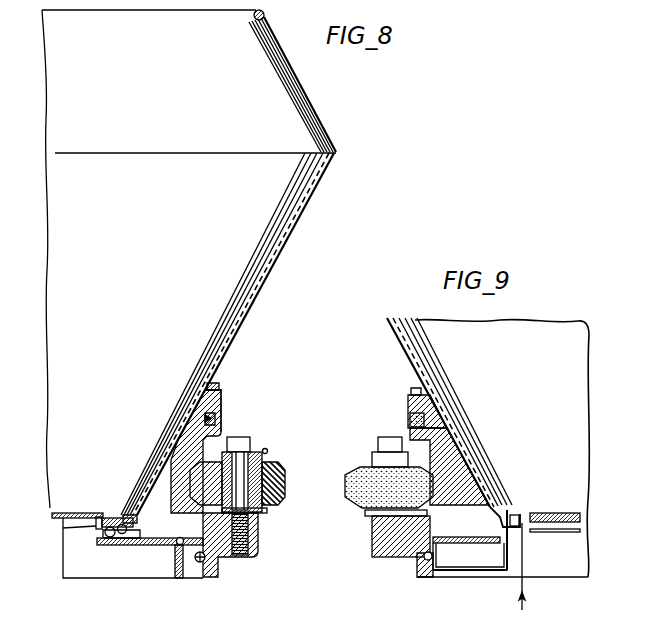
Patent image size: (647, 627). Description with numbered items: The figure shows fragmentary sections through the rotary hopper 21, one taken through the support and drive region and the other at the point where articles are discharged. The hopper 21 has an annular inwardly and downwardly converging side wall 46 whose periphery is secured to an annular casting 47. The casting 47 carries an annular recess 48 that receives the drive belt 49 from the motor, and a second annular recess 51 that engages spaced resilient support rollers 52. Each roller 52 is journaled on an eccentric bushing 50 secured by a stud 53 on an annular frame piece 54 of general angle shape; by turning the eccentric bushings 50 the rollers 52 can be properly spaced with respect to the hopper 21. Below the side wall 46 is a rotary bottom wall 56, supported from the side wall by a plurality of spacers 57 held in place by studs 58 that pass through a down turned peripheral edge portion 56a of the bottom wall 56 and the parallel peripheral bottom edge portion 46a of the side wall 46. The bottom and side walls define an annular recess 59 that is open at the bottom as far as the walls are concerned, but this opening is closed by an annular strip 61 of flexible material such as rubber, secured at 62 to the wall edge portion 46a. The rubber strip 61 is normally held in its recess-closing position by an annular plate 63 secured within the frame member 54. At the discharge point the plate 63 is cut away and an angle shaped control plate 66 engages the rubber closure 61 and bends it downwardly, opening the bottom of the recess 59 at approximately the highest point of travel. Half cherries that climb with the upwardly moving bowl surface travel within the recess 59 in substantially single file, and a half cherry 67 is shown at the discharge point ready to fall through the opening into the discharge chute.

In FIG. 8, the rotary hopper 21 is at (143, 200).
In FIG. 9, the rotary hopper 21 is at (495, 368).
In FIG. 8, the side wall 46 is at (246, 312).
In FIG. 9, the side wall 46 is at (393, 332).
In FIG. 8, the peripheral bottom edge portion 46a is at (136, 518).
In FIG. 9, the peripheral bottom edge portion 46a is at (503, 518).
In FIG. 8, the annular casting 47 is at (222, 405).
In FIG. 9, the annular casting 47 is at (408, 402).
In FIG. 8, the annular recess 48 is at (205, 419).
In FIG. 8, the drive belt 49 is at (216, 422).
In FIG. 9, the drive belt 49 is at (408, 419).
In FIG. 8, the eccentric bushing 50 is at (267, 457).
In FIG. 8, the second annular recess 51 is at (198, 478).
In FIG. 9, the second annular recess 51 is at (445, 487).
In FIG. 8, the resilient support roller 52 is at (281, 477).
In FIG. 9, the resilient support roller 52 is at (352, 488).
In FIG. 8, the stud 53 is at (245, 510).
In FIG. 8, the annular frame piece 54 is at (259, 538).
In FIG. 9, the annular frame piece 54 is at (380, 542).
In FIG. 8, the rotary bottom wall 56 is at (72, 513).
In FIG. 9, the rotary bottom wall 56 is at (557, 512).
In FIG. 8, the down turned peripheral edge portion 56a is at (100, 524).
In FIG. 9, the down turned peripheral edge portion 56a is at (581, 523).
In FIG. 8, the spacer 57 is at (111, 518).
In FIG. 8, the stud 58 is at (98, 523).
In FIG. 8, the annular recess 59 is at (120, 523).
In FIG. 9, the annular recess 59 is at (527, 545).
In FIG. 8, the flexible strip 61 is at (122, 545).
In FIG. 9, the flexible strip 61 is at (504, 555).
In FIG. 8, the securing point 62 is at (150, 545).
In FIG. 9, the securing point 62 is at (488, 530).
In FIG. 8, the annular plate 63 is at (181, 546).
In FIG. 9, the annular plate 63 is at (478, 545).
In FIG. 9, the control plate 66 is at (494, 572).
In FIG. 8, the half cherry 67 is at (104, 538).
In FIG. 9, the half cherry 67 is at (519, 516).